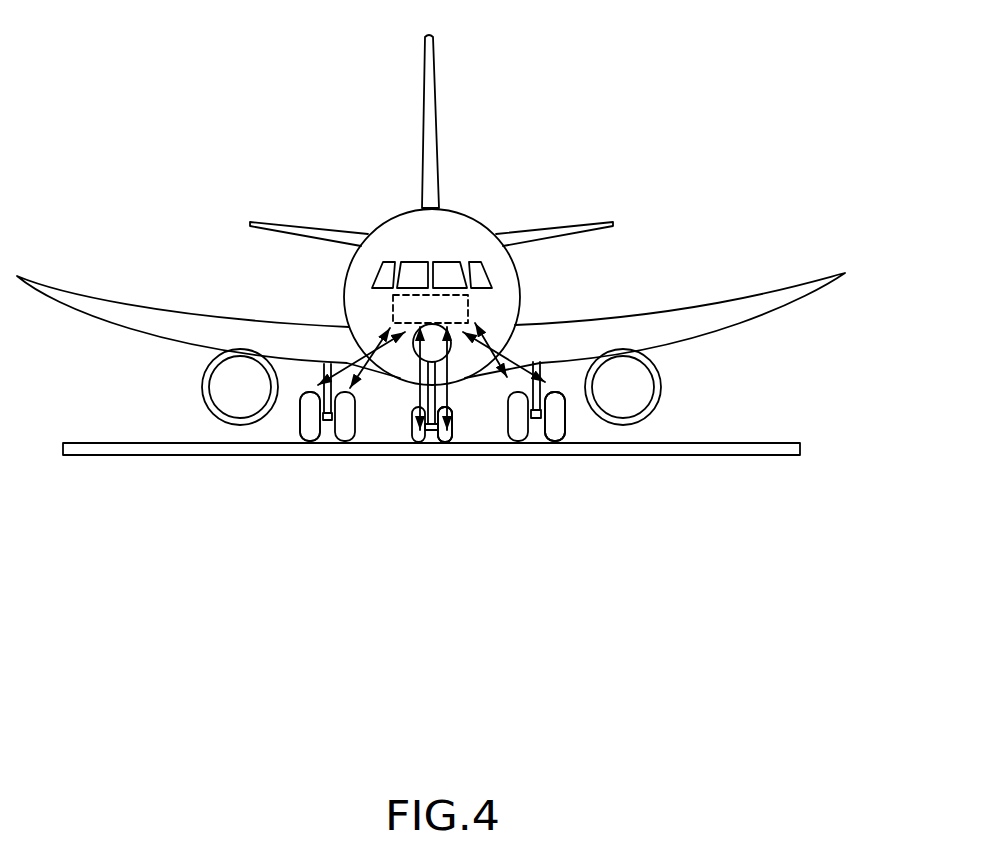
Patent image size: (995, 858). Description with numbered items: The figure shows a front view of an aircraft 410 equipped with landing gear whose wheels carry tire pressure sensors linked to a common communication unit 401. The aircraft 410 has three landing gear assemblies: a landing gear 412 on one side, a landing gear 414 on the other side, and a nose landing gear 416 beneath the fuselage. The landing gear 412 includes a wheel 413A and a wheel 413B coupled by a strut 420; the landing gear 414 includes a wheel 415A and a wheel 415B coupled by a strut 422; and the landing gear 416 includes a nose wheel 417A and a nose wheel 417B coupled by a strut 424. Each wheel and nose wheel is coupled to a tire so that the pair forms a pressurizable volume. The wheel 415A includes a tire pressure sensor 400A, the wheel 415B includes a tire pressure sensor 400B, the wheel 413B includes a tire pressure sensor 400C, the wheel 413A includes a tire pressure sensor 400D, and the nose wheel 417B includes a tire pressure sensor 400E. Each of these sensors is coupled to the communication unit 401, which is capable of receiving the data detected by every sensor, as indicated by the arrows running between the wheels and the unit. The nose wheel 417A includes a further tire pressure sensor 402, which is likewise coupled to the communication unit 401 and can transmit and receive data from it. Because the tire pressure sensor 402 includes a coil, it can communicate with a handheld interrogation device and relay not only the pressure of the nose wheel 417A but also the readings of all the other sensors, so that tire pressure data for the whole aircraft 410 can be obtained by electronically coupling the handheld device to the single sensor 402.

The aircraft 410 is at (275, 126).
The communication unit 401 is at (468, 318).
The tire pressure sensor 400A is at (303, 392).
The tire pressure sensor 400B is at (343, 392).
The tire pressure sensor 400C is at (518, 392).
The tire pressure sensor 400D is at (553, 392).
The tire pressure sensor 400E is at (422, 442).
The tire pressure sensor 402 is at (448, 442).
The landing gear 412 is at (581, 421).
The wheel 413A is at (566, 436).
The wheel 413B is at (536, 392).
The landing gear 414 is at (283, 426).
The wheel 415A is at (297, 430).
The wheel 415B is at (357, 440).
The landing gear 416 is at (462, 398).
The nose wheel 417A is at (458, 443).
The nose wheel 417B is at (414, 441).
The strut 420 is at (549, 442).
The strut 422 is at (327, 438).
The strut 424 is at (433, 432).